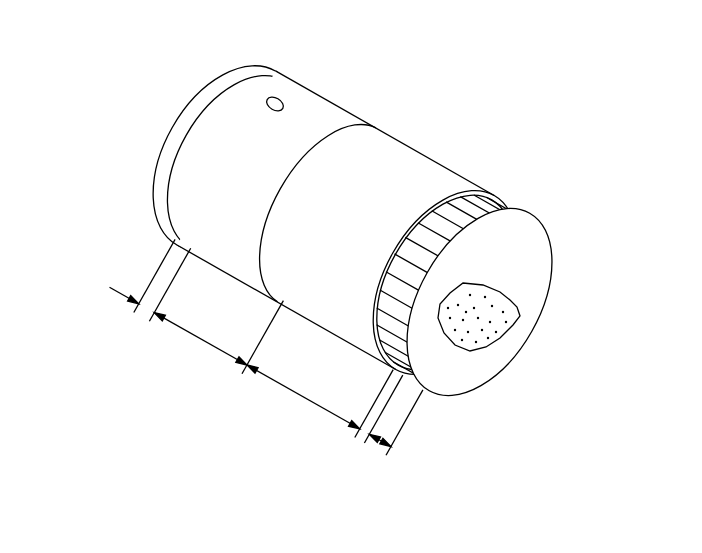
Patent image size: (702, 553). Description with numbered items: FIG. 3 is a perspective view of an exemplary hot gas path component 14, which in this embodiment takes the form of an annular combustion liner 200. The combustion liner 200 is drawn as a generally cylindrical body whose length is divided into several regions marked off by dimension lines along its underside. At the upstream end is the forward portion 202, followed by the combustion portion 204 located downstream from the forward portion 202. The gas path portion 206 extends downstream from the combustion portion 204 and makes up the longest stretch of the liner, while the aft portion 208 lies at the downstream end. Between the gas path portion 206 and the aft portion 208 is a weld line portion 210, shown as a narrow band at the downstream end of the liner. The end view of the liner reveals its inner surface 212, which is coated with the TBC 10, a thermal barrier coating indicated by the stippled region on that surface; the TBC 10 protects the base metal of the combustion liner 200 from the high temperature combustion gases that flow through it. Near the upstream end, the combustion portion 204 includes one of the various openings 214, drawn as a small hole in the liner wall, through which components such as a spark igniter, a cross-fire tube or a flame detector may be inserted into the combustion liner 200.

The hot gas path component 14 is at (163, 108).
The combustion liner 200 is at (536, 215).
The forward portion 202 is at (148, 308).
The combustion portion 204 is at (201, 339).
The gas path portion 206 is at (300, 394).
The aft portion 208 is at (370, 446).
The weld line portion 210 is at (362, 438).
The inner surface 212 is at (488, 360).
The openings 214 is at (272, 100).
The TBC 10 is at (516, 307).